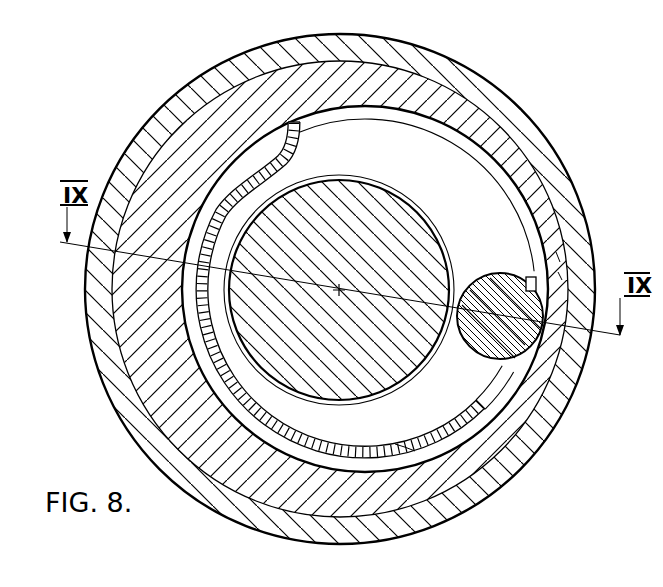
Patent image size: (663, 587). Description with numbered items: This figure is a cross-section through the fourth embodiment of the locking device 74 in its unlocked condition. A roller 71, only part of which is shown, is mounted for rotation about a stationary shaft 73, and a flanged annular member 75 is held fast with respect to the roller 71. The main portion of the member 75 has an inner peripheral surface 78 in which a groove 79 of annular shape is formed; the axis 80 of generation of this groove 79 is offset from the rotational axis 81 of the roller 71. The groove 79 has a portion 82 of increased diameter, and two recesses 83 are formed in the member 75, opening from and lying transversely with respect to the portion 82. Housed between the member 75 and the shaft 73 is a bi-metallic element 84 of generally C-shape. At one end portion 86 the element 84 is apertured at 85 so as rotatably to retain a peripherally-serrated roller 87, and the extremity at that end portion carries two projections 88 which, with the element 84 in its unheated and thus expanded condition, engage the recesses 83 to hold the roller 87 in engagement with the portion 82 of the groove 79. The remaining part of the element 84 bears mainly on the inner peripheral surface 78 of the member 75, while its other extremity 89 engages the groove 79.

The roller 71 is at (410, 66).
The stationary shaft 73 is at (393, 228).
The locking device 74 is at (488, 131).
The flanged annular member 75 is at (515, 158).
The inner peripheral surface 78 is at (492, 192).
The groove 79 is at (430, 122).
The axis of generation 80 is at (362, 289).
The rotational axis 81 is at (339, 290).
The portion of increased diameter 82 is at (560, 275).
The recesses 83 is at (557, 257).
The bi-metallic element 84 is at (405, 450).
The aperture 85 is at (477, 398).
The end portion 86 is at (500, 366).
The peripherally-serrated roller 87 is at (466, 342).
The projections 88 is at (527, 282).
The other extremity 89 is at (300, 143).